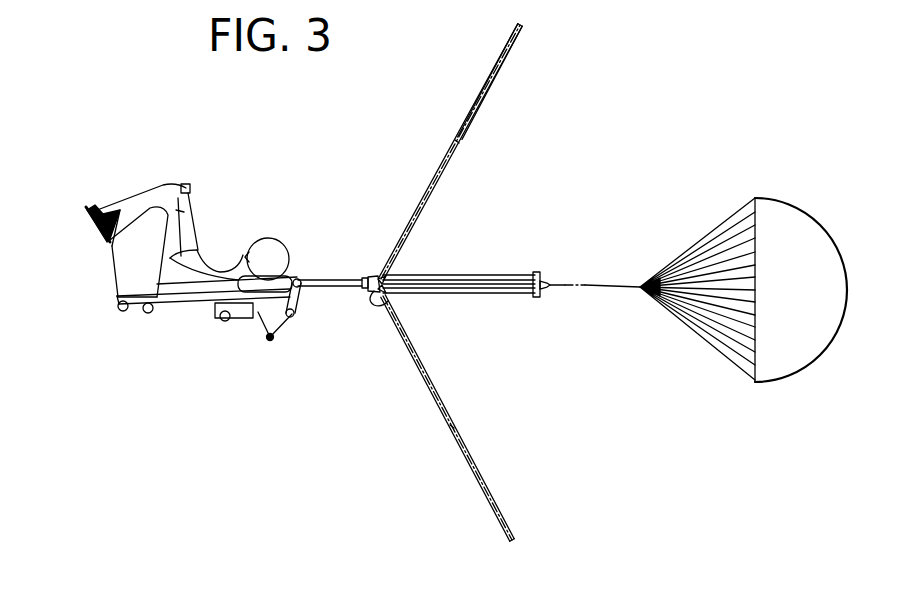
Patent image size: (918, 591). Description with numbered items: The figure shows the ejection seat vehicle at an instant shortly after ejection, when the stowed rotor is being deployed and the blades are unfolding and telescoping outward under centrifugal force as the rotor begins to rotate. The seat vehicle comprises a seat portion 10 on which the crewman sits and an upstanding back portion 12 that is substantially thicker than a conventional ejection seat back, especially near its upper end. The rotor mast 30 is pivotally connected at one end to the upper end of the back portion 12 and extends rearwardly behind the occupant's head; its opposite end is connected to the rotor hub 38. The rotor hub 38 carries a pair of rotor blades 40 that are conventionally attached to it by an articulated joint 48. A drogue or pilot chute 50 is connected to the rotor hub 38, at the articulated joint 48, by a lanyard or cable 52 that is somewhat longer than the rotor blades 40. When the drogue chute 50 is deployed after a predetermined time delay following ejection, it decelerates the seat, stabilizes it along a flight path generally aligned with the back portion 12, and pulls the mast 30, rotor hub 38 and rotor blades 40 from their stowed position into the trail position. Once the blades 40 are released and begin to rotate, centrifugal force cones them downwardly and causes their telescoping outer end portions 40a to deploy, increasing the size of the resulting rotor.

The seat portion 10 is at (104, 275).
The back portion 12 is at (188, 292).
The rotor mast 30 is at (320, 287).
The rotor hub 38 is at (370, 276).
The rotor blades 40 is at (422, 203).
The telescoping outer end portions 40a is at (477, 107).
The articulated joint 48 is at (386, 302).
The drogue chute 50 is at (812, 271).
The lanyard 52 is at (623, 285).